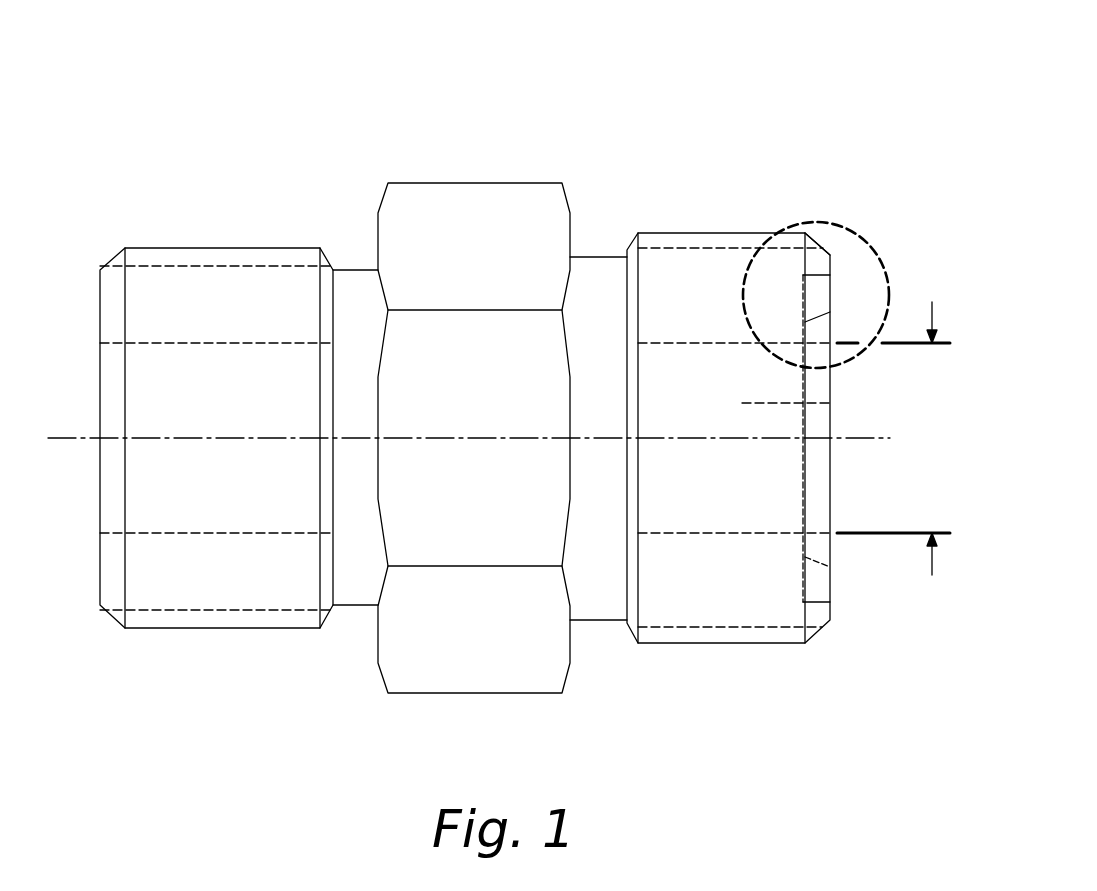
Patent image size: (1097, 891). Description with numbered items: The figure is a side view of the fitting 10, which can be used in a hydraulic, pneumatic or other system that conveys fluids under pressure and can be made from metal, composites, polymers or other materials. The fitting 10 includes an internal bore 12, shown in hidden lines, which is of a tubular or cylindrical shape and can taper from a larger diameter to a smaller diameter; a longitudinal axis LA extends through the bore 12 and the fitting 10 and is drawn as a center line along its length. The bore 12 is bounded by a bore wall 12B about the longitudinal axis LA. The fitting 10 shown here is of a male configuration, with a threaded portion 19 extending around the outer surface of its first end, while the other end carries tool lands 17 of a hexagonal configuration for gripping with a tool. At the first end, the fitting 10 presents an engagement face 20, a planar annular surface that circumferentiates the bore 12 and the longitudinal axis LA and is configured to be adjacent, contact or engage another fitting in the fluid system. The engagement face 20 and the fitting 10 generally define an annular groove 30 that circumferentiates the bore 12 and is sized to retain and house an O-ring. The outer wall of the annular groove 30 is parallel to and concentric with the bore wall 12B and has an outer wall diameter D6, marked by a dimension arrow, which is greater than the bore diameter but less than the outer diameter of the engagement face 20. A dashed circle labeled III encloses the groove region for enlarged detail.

The fitting 10 is at (499, 352).
The internal bore 12 is at (830, 403).
The bore wall 12B is at (817, 345).
The tool lands 17 is at (477, 183).
The threaded portion 19 is at (687, 233).
The engagement face 20 is at (830, 263).
The annular groove 30 is at (818, 293).
The outer wall diameter D6 is at (893, 428).
The longitudinal axis LA is at (405, 437).
The detail III is at (848, 228).